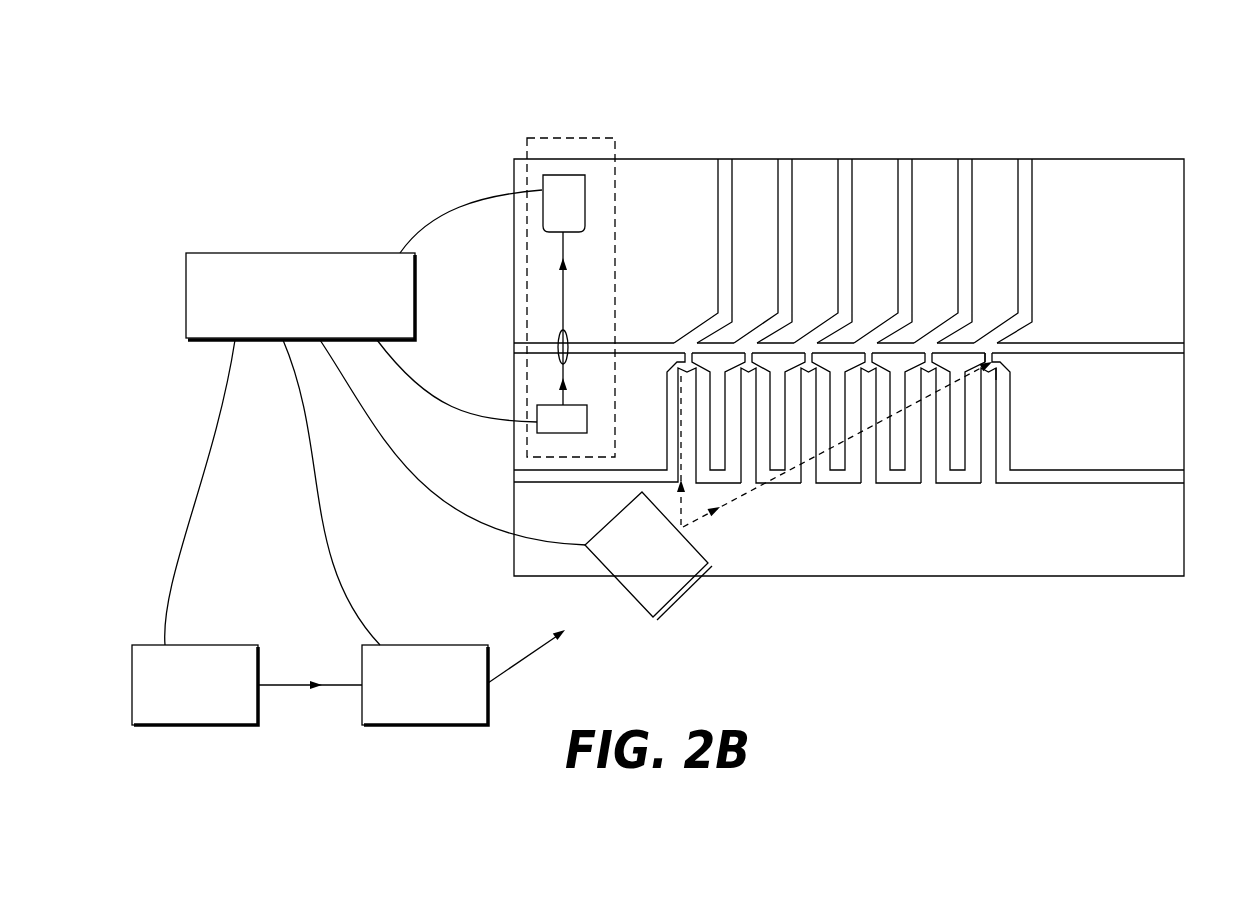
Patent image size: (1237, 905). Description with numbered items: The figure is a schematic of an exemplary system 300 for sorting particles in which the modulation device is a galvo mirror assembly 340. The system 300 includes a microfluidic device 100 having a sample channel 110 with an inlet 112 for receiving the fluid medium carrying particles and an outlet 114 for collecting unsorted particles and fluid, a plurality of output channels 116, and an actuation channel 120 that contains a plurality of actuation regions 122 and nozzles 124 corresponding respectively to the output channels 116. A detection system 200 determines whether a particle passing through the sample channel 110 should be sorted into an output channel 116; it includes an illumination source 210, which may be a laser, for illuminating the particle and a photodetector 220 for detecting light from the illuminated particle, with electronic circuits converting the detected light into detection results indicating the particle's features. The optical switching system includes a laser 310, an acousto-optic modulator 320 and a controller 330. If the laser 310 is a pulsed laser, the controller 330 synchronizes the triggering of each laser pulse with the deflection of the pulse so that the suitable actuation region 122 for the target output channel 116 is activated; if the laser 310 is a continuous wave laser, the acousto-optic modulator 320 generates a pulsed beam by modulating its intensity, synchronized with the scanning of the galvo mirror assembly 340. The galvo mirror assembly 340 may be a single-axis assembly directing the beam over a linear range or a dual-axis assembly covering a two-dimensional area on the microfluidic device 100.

The microfluidic device 100 is at (849, 327).
The sample channel 110 is at (628, 343).
The inlet 112 is at (517, 345).
The outlet 114 is at (1184, 348).
The output channels 116 is at (958, 177).
The actuation channel 120 is at (1058, 483).
The actuation regions 122 is at (1000, 364).
The nozzles 124 is at (993, 357).
The detection system 200 is at (563, 260).
The illumination source 210 is at (587, 412).
The photodetector 220 is at (585, 181).
The system for sorting particles 300 is at (362, 82).
The laser 310 is at (188, 727).
The acousto-optic modulator 320 is at (425, 727).
The controller 330 is at (186, 285).
The galvo mirror assembly 340 is at (675, 593).